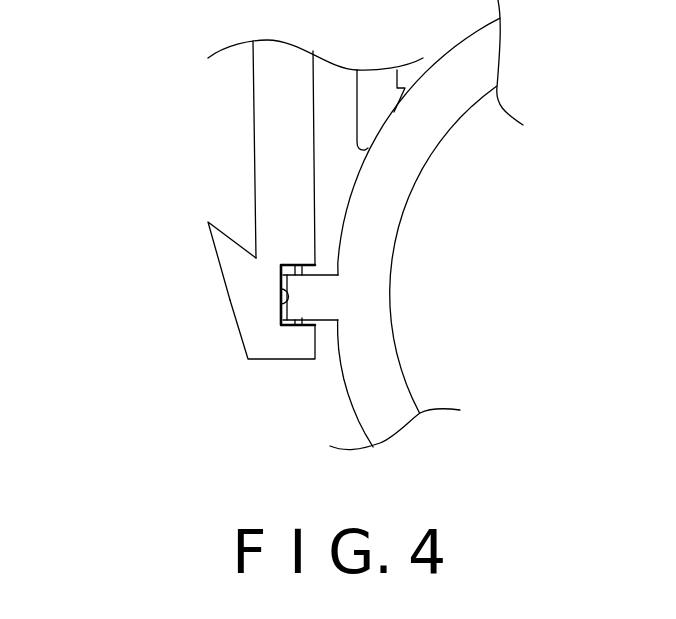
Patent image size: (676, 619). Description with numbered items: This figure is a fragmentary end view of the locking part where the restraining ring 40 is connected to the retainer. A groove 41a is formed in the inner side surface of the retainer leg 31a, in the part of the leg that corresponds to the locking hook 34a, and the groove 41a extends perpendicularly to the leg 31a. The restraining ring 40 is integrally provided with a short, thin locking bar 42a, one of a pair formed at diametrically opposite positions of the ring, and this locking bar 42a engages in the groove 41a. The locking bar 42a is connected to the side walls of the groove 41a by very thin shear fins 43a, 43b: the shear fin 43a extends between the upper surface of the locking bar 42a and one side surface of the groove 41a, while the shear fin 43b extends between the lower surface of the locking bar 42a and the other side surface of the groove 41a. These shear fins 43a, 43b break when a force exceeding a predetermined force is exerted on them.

The leg 31a is at (272, 118).
The locking hook 34a is at (223, 258).
The groove 41a is at (283, 286).
The restraining ring 40 is at (392, 180).
The locking bar 42a is at (312, 297).
The shear fin 43a is at (300, 272).
The shear fin 43b is at (300, 318).